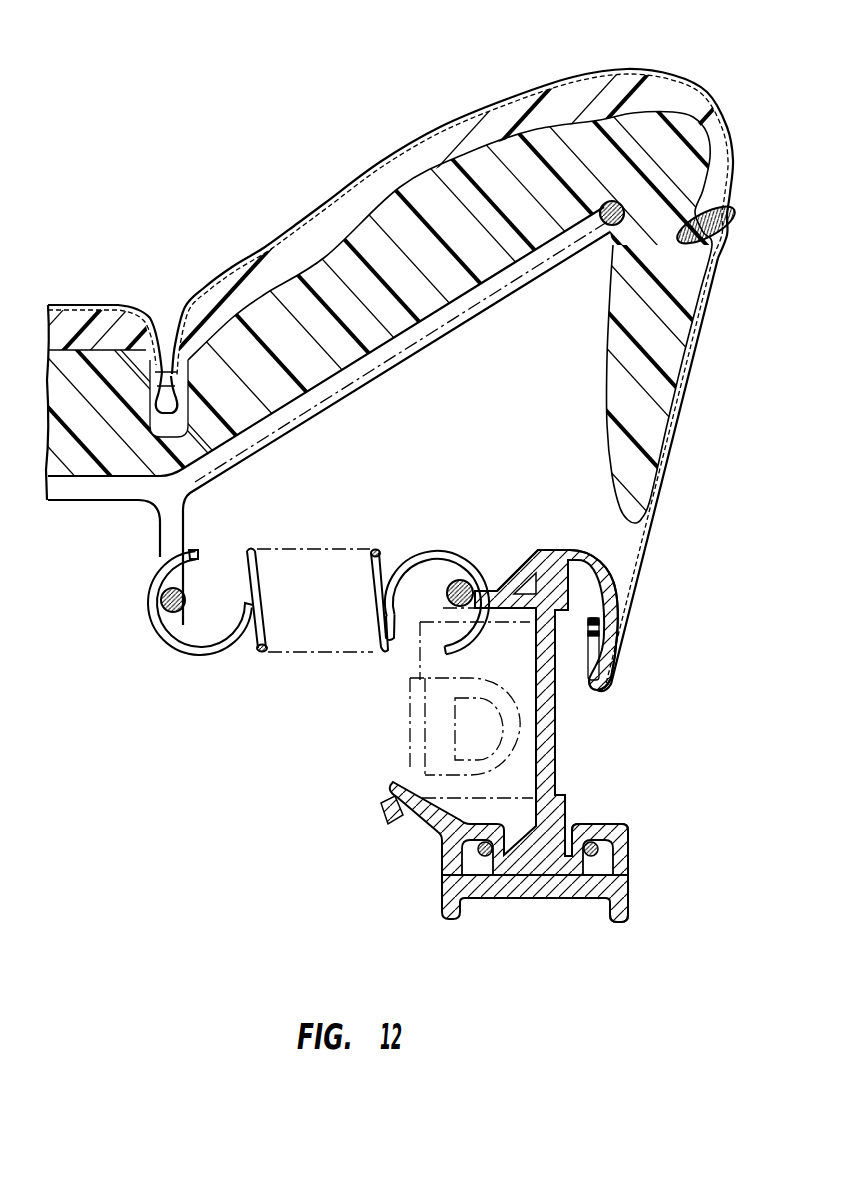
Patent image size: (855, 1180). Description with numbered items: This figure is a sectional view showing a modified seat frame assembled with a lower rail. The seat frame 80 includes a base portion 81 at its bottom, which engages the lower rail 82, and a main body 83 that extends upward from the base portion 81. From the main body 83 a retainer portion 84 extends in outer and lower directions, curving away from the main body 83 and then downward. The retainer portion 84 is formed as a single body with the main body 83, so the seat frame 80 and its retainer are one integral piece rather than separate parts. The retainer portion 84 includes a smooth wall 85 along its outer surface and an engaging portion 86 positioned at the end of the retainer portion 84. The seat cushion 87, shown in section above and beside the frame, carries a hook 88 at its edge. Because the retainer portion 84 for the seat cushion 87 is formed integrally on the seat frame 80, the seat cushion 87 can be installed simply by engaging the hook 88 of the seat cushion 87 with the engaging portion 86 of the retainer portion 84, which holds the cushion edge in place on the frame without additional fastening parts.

The seat frame 80 is at (556, 773).
The base portion 81 is at (540, 858).
The lower rail 82 is at (628, 876).
The main body 83 is at (545, 738).
The retainer portion 84 is at (613, 579).
The smooth wall 85 is at (583, 548).
The engaging portion 86 is at (600, 660).
The seat cushion 87 is at (668, 396).
The hook 88 is at (603, 690).